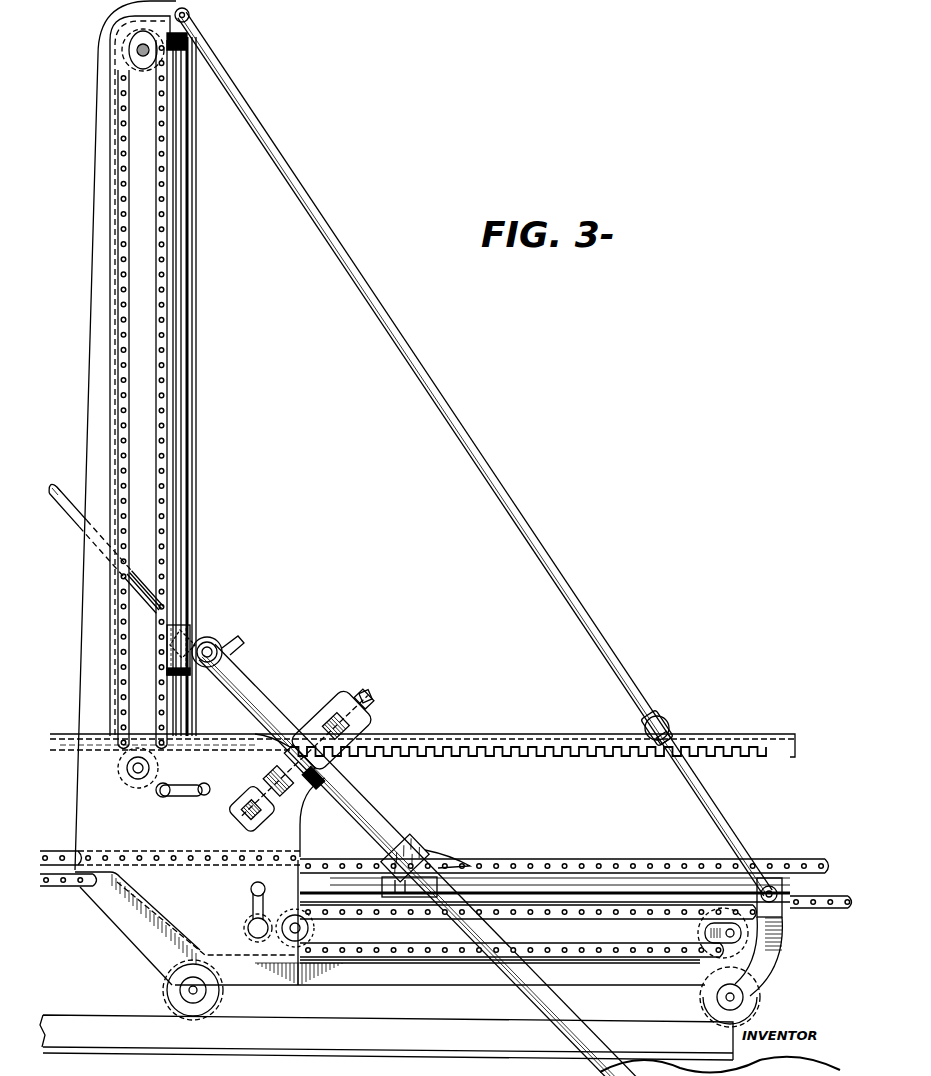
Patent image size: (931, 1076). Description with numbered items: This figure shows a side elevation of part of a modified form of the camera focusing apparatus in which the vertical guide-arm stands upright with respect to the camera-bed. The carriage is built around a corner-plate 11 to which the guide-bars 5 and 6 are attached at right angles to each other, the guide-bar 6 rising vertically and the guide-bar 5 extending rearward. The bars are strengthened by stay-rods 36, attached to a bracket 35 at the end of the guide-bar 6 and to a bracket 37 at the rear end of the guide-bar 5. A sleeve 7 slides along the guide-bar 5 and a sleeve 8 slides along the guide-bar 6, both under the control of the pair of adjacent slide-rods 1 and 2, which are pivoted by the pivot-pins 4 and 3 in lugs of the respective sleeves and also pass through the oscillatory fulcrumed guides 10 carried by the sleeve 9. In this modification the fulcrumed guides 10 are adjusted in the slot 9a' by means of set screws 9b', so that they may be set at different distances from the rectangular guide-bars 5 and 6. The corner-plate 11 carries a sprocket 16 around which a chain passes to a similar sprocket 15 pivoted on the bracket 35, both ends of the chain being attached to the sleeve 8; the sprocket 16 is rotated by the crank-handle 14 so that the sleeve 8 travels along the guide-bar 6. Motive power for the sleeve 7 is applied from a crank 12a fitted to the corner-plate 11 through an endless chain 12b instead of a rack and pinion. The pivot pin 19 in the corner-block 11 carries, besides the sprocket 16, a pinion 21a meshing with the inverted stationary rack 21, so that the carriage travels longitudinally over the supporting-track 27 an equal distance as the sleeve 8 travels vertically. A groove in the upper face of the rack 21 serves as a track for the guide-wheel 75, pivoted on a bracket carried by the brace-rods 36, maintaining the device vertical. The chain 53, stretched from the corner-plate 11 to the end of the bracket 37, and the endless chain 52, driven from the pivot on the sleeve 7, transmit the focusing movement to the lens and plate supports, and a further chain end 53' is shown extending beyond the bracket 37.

The slide-rod 1 is at (252, 694).
The slide-rod 2 is at (62, 514).
The pivot-pin 3 is at (200, 638).
The pivot-pin 4 is at (401, 849).
The guide-bar 5 is at (516, 880).
The guide-bar 6 is at (195, 556).
The sleeve 7 is at (407, 898).
The sleeve 8 is at (167, 655).
The sleeve 9 is at (320, 735).
The slot 9a' is at (386, 710).
The set screws 9b' is at (308, 753).
The oscillatory fulcrumed guides 10 is at (333, 770).
The corner-plate 11 is at (428, 943).
The crank 12a is at (251, 891).
The endless chain 12b is at (384, 960).
The crank-handle 14 is at (210, 785).
The sprocket 15 is at (120, 96).
The sprocket 16 is at (120, 770).
The pivot pin 19 is at (137, 792).
The inverted stationary rack 21 is at (466, 740).
The pinion 21a is at (148, 740).
The lower lateral bar 27 is at (386, 1037).
The bracket 35 is at (200, 16).
The stay-rod 36 is at (410, 333).
The bracket 37 is at (778, 885).
The endless chain 52 is at (602, 859).
The chain or flexible band 53 is at (170, 885).
The chain end 53' is at (821, 922).
The guide-wheel 75 is at (672, 729).